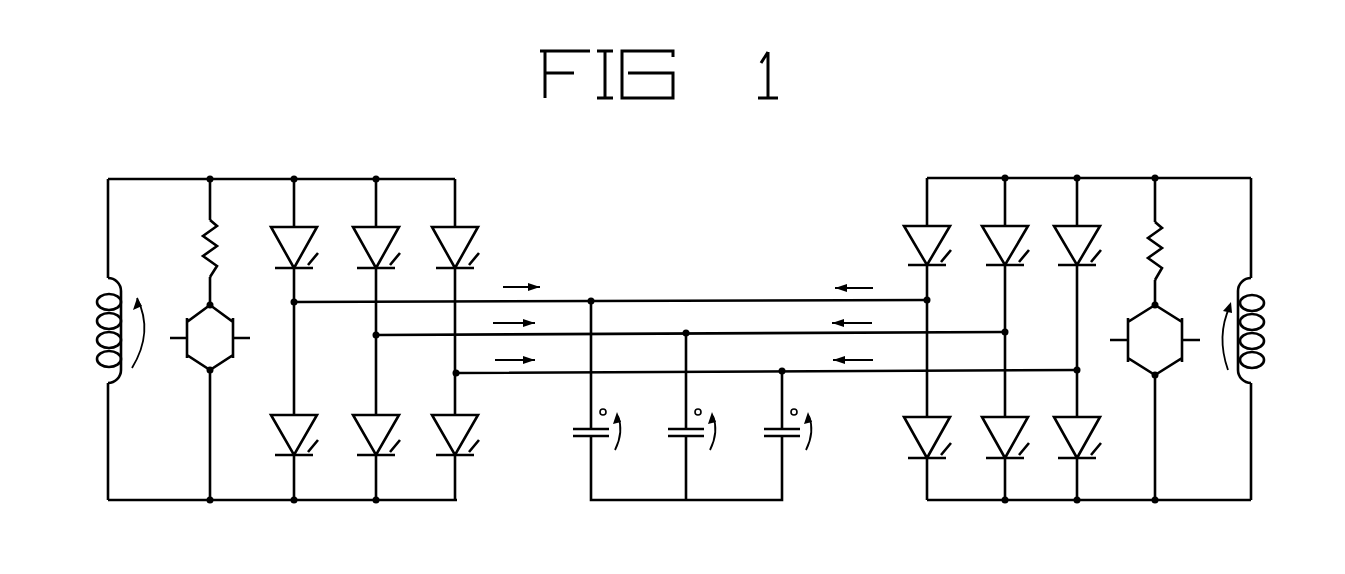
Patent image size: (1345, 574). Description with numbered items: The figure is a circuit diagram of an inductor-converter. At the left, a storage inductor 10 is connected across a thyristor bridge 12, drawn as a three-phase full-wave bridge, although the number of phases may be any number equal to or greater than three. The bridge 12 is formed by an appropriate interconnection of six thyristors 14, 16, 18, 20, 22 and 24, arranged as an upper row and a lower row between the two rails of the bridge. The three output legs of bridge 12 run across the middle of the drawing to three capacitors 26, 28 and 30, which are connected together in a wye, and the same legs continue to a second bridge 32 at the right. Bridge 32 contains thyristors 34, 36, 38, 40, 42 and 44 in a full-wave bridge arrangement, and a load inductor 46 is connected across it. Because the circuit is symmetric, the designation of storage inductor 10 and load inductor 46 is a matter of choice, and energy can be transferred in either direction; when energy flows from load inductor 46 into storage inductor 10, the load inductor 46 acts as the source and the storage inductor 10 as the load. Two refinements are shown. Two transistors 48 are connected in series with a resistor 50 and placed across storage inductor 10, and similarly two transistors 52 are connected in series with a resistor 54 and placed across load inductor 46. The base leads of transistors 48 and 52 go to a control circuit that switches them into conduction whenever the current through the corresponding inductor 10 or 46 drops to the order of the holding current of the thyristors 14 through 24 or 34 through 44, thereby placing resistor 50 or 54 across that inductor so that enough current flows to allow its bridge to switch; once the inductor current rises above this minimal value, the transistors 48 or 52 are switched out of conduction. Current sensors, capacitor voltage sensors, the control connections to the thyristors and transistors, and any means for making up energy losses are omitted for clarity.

The storage inductor 10 is at (98, 327).
The thyristor bridge 12 is at (364, 177).
The thyristor 14 is at (301, 240).
The thyristor 16 is at (383, 240).
The thyristor 18 is at (462, 240).
The thyristor 20 is at (302, 426).
The thyristor 22 is at (386, 426).
The thyristor 24 is at (465, 428).
The capacitor 26 is at (573, 432).
The capacitor 28 is at (668, 432).
The capacitor 30 is at (764, 432).
The bridge 32 is at (978, 176).
The thyristor 34 is at (921, 238).
The thyristor 36 is at (996, 238).
The thyristor 38 is at (1070, 238).
The thyristor 40 is at (940, 428).
The thyristor 42 is at (1018, 428).
The thyristor 44 is at (1088, 428).
The load inductor 46 is at (1269, 342).
The transistors 48 is at (207, 357).
The resistor 50 is at (201, 245).
The transistors 52 is at (1150, 322).
The resistor 54 is at (1165, 252).